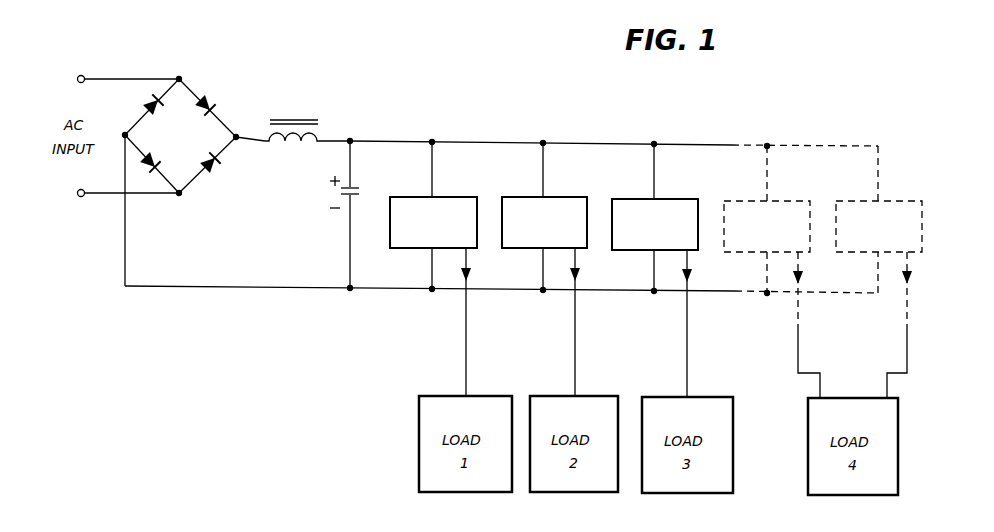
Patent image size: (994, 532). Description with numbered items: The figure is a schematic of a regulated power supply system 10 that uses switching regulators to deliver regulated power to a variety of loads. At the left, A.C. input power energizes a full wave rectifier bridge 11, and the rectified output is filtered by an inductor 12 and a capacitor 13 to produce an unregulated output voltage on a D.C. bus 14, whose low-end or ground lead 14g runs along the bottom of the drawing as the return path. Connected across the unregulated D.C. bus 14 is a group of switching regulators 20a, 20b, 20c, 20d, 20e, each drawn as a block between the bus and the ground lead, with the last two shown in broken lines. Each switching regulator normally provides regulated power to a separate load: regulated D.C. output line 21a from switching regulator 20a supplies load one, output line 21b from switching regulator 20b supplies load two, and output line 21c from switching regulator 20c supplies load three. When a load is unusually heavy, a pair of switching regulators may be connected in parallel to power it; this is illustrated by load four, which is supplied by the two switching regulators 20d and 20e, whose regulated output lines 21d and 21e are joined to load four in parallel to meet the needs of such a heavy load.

The regulated power supply system 10 is at (216, 338).
The full wave rectifier bridge 11 is at (177, 117).
The inductor 12 is at (300, 130).
The capacitor 13 is at (347, 193).
The D.C. bus 14 is at (352, 140).
The ground lead 14g is at (300, 288).
The switching regulator 20a is at (447, 190).
The switching regulator 20b is at (551, 205).
The switching regulator 20c is at (664, 205).
The switching regulator 20d is at (801, 201).
The switching regulator 20e is at (903, 201).
The regulated D.C. output line 21a is at (467, 333).
The regulated D.C. output line 21b is at (576, 333).
The regulated D.C. output line 21c is at (698, 331).
The regulated output line 21d is at (799, 337).
The regulated output line 21e is at (918, 331).